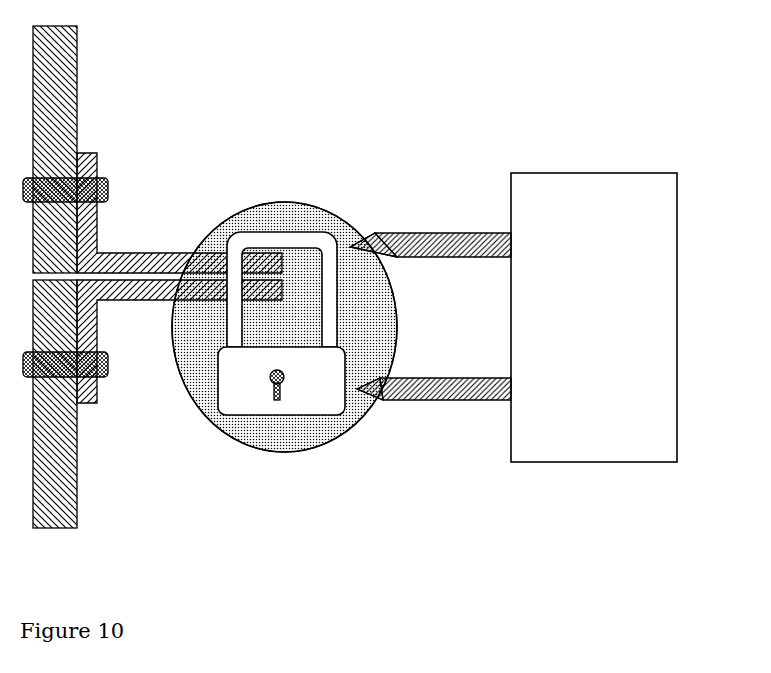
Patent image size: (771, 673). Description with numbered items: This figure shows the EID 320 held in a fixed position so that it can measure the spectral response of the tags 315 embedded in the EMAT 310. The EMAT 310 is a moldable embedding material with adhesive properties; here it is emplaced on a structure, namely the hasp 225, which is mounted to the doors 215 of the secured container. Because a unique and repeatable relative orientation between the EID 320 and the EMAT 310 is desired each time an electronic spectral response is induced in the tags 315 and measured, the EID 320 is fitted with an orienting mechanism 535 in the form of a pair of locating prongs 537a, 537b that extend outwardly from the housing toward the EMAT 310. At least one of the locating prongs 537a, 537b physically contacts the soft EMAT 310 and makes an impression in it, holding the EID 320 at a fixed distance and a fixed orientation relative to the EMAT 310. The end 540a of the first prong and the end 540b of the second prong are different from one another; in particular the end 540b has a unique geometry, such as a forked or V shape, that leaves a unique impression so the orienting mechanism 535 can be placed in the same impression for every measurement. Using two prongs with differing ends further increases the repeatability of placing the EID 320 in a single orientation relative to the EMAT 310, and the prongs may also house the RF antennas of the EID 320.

The doors 215 is at (78, 66).
The hasp 225 is at (144, 303).
The EMAT 310 is at (243, 206).
The tags 315 is at (318, 433).
The EID 320 is at (618, 375).
The orienting mechanism 535 is at (388, 293).
The first locating prong 537a is at (388, 216).
The second locating prong 537b is at (428, 437).
The end of first locating prong 540a is at (358, 243).
The end of second locating prong 540b is at (380, 402).